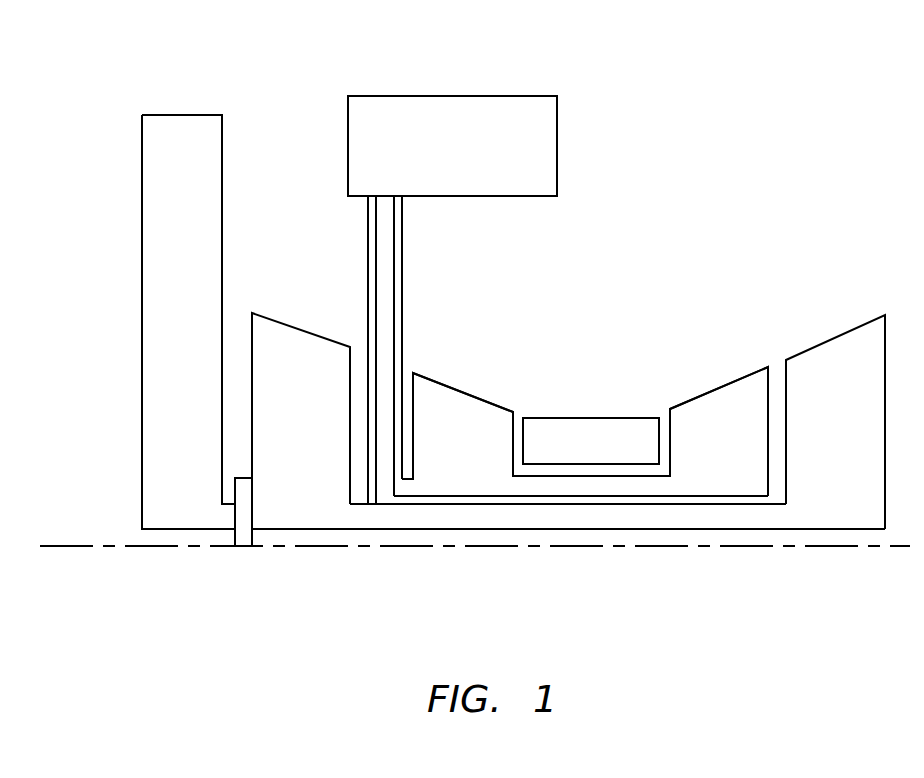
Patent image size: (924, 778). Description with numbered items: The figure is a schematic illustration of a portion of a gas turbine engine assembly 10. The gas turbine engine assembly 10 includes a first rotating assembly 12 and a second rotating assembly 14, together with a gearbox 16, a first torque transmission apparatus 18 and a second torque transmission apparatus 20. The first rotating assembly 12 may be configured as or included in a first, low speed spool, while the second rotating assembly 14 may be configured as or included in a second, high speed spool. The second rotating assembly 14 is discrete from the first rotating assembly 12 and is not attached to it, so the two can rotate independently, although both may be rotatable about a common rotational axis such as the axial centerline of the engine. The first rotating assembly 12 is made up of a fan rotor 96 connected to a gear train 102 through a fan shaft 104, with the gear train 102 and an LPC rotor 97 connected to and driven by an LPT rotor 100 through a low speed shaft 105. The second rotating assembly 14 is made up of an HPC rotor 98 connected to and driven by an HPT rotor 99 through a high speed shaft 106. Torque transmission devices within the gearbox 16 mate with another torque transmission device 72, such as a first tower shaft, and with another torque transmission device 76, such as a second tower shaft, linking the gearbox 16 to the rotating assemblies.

The gas turbine engine assembly 10 is at (843, 112).
The first rotating assembly 12 is at (288, 529).
The second rotating assembly 14 is at (475, 497).
The gearbox 16 is at (517, 96).
The first torque transmission apparatus 18 is at (368, 248).
The second torque transmission apparatus 20 is at (402, 280).
The torque transmission device 72 is at (367, 313).
The torque transmission device 76 is at (402, 323).
The fan rotor 96 is at (142, 472).
The LPC rotor 97 is at (328, 512).
The HPC rotor 98 is at (440, 465).
The HPT rotor 99 is at (718, 475).
The LPT rotor 100 is at (835, 493).
The gear train 102 is at (243, 538).
The fan shaft 104 is at (227, 513).
The low speed shaft 105 is at (630, 518).
The high speed shaft 106 is at (570, 485).